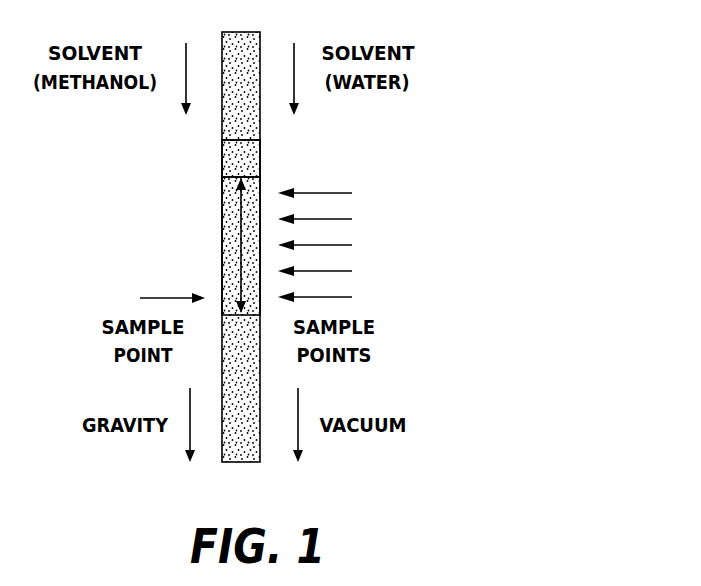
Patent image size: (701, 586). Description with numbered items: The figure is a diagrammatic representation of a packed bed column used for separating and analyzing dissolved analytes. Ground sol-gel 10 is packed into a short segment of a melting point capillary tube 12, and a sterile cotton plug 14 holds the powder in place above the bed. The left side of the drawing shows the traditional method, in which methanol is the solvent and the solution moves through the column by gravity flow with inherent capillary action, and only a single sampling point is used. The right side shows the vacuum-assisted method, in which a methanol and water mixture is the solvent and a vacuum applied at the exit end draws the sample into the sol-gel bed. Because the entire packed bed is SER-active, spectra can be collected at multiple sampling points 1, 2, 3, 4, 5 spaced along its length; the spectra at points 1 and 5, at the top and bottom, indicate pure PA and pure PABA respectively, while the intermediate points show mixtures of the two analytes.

The ground sol-gel 10 is at (222, 222).
The melting point capillary tube 12 is at (259, 50).
The sterile cotton plug 14 is at (259, 157).
The sampling point 1 is at (328, 193).
The sampling point 2 is at (328, 219).
The sampling point 3 is at (328, 245).
The sampling point 4 is at (328, 271).
The sampling point 5 is at (328, 297).